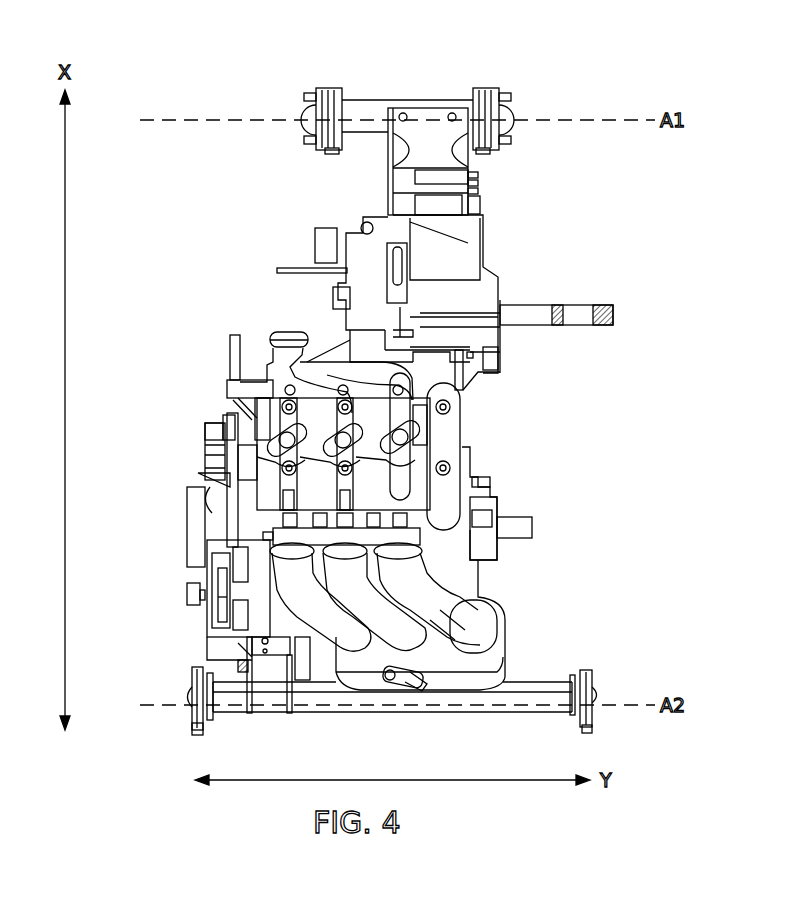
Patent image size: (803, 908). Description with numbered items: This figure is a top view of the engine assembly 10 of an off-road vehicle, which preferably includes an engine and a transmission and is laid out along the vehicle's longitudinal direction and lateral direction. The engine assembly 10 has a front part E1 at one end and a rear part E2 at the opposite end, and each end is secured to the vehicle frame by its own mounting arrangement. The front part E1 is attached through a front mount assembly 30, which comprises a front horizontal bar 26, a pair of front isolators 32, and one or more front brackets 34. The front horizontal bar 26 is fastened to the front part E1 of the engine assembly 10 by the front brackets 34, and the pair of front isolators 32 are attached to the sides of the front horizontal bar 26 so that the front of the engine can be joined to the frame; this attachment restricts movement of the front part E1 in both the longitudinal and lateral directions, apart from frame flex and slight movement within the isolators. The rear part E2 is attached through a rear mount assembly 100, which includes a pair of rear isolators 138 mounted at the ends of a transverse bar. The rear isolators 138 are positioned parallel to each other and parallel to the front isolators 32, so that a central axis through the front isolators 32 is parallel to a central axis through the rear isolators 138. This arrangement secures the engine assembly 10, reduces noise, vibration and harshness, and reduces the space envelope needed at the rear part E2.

The rear mount assembly 100 is at (542, 75).
The pair of rear isolators 138 is at (307, 93).
The rear part E2 is at (501, 192).
The engine assembly 10 is at (516, 414).
The front part E1 is at (536, 658).
The front mount assembly 30 is at (626, 720).
The front brackets 34 is at (417, 712).
The pair of front isolators 32 is at (193, 670).
The front horizontal bar 26 is at (542, 717).